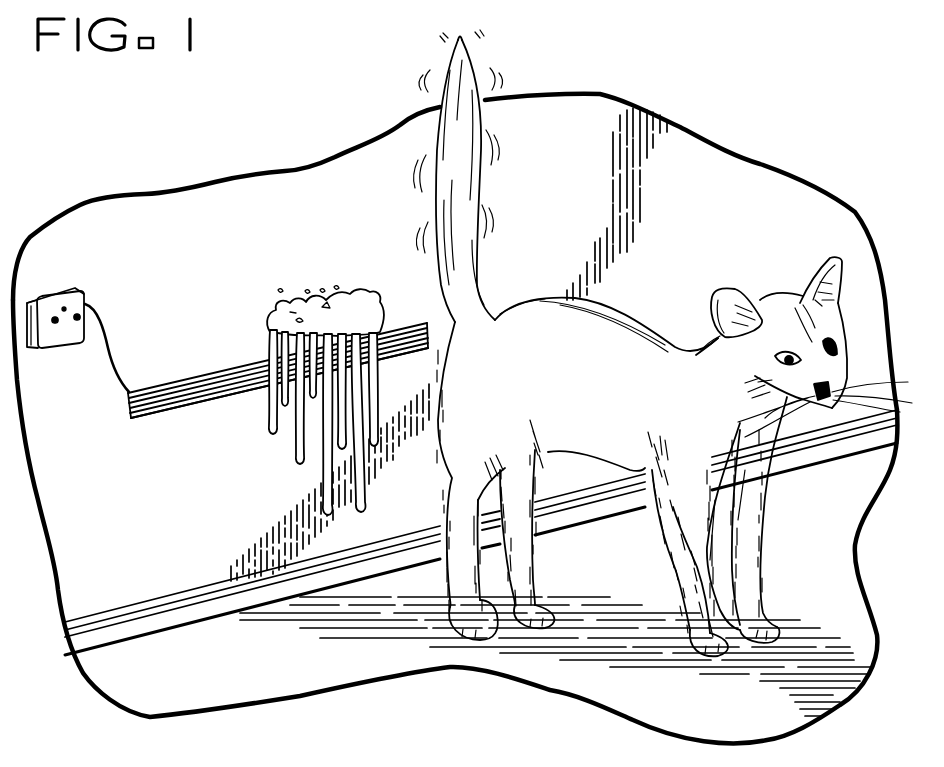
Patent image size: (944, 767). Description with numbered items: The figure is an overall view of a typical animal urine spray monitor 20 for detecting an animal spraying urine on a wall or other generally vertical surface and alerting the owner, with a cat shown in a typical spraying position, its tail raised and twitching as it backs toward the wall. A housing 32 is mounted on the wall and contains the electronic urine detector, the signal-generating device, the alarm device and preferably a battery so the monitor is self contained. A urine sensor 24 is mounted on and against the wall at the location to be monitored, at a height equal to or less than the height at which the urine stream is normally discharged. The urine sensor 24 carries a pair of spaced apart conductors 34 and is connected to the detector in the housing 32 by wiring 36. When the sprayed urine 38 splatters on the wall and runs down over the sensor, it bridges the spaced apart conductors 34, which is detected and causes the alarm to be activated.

The animal urine spray monitor 20 is at (193, 272).
The urine sensor 24 is at (199, 378).
The housing 32 is at (64, 294).
The spaced apart conductors 34 is at (193, 402).
The wiring 36 is at (105, 368).
The urine 38 is at (350, 288).